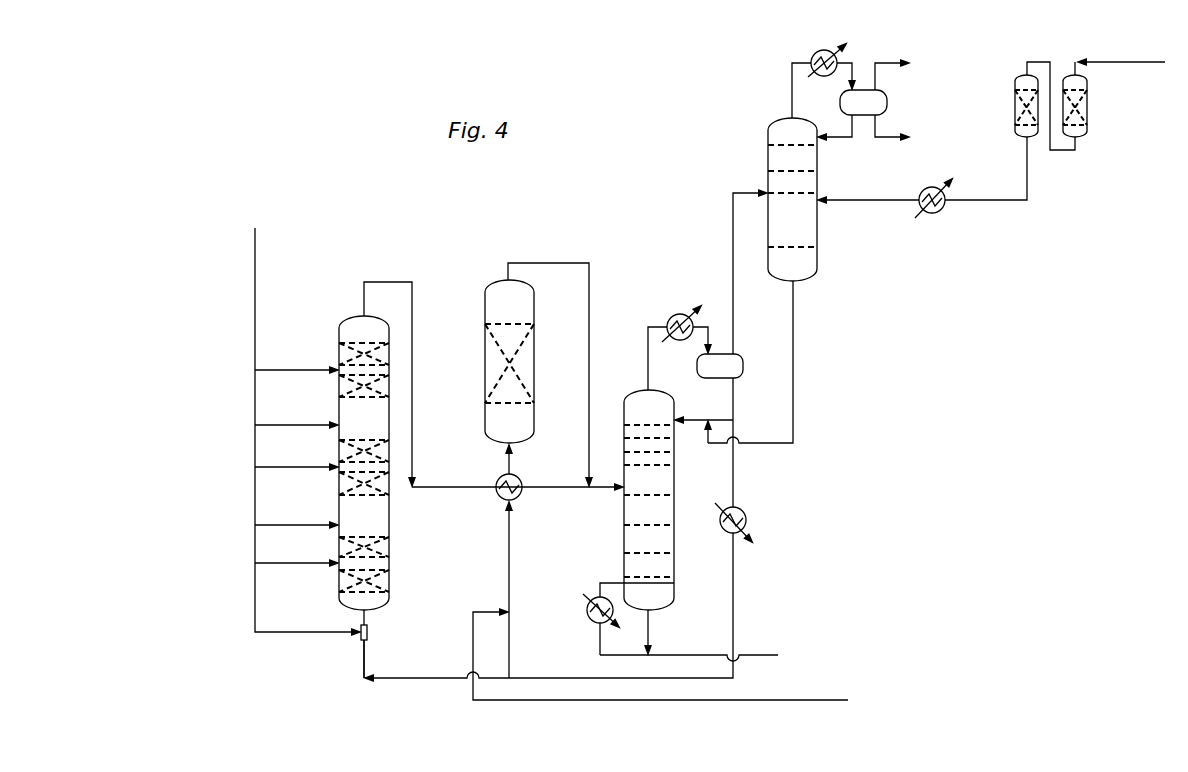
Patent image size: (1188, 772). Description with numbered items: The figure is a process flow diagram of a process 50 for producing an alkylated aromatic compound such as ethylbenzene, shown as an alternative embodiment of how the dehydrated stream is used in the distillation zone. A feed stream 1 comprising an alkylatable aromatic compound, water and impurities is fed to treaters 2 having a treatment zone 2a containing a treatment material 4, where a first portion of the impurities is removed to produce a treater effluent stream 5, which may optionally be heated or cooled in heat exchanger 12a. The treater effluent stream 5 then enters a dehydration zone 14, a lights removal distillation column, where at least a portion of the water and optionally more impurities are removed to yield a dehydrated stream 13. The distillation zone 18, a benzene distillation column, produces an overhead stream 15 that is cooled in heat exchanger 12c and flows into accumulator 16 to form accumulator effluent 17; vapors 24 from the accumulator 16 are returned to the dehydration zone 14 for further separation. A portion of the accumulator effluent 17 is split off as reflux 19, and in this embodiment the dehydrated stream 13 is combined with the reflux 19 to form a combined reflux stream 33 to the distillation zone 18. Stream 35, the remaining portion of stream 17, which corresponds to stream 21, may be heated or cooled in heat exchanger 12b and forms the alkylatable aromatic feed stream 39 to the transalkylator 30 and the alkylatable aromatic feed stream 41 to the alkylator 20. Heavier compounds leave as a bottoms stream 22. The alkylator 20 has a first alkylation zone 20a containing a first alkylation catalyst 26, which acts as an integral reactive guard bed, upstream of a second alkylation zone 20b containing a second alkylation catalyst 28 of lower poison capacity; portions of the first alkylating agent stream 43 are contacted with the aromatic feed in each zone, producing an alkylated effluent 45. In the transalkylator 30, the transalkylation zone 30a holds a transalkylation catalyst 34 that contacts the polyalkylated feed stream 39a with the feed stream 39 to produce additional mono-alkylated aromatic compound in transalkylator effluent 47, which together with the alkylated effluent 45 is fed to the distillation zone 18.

The feed stream 1 is at (1135, 62).
The treaters 2 is at (1104, 111).
The treatment zone 2a is at (1088, 107).
The treatment material 4 is at (1015, 101).
The treater effluent stream 5 is at (997, 200).
The heat exchanger 12a is at (932, 213).
The heat exchanger 12b is at (748, 522).
The heat exchanger 12c is at (677, 312).
The dehydrated stream 13 is at (795, 346).
The dehydration zone 14 is at (768, 166).
The overhead stream 15 is at (660, 325).
The accumulator 16 is at (720, 365).
The accumulator effluent 17 is at (741, 404).
The distillation zone 18 is at (624, 540).
The reflux 19 is at (718, 420).
The alkylator 20 is at (371, 488).
The first alkylation zone 20a is at (377, 580).
The second alkylation zone 20b is at (373, 547).
The stream 21 is at (735, 480).
The bottoms stream 22 is at (765, 655).
The vapors 24 is at (733, 236).
The first alkylation catalyst 26 is at (339, 582).
The second alkylation catalyst 28 is at (339, 548).
The transalkylator 30 is at (503, 353).
The transalkylation zone 30a is at (503, 363).
The combined reflux stream 33 is at (704, 428).
The transalkylation catalyst 34 is at (526, 372).
The stream 35 is at (735, 590).
The alkylatable aromatic feed stream to the transalkylator 39 is at (509, 637).
The polyalkylated feed stream 39a is at (830, 700).
The alkylatable aromatic feed stream to the alkylator 41 is at (364, 660).
The first alkylating agent stream 43 is at (255, 297).
The alkylated effluent 45 is at (388, 282).
The transalkylator effluent 47 is at (590, 280).
The process 50 is at (210, 672).